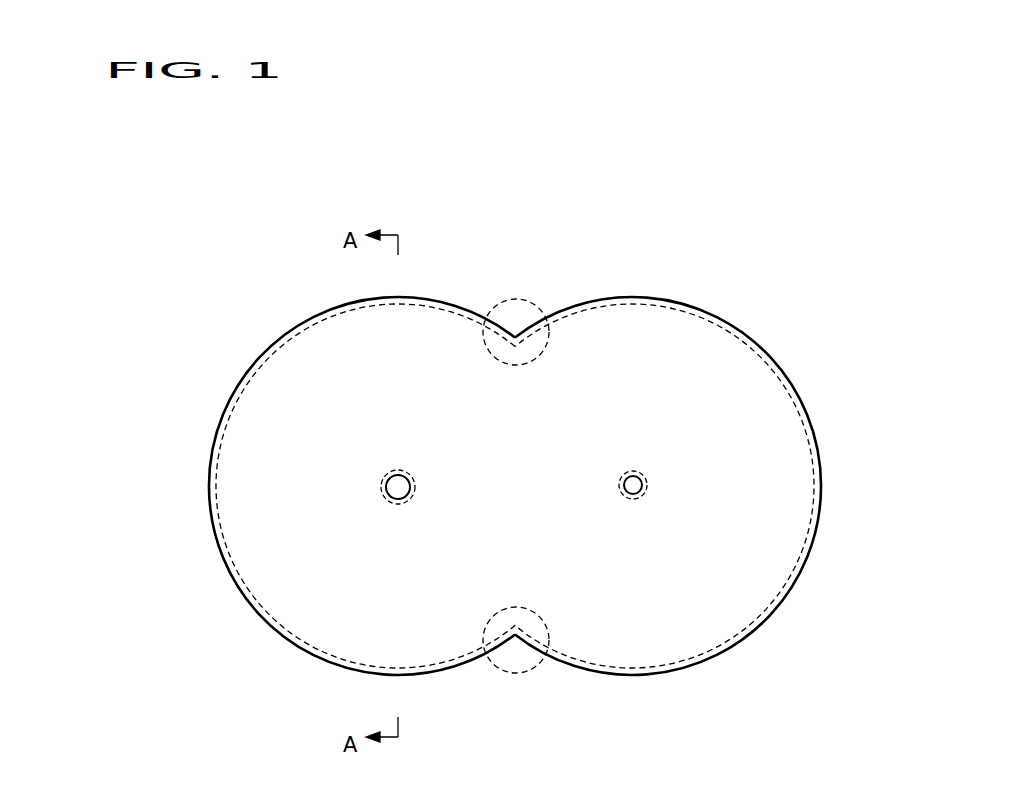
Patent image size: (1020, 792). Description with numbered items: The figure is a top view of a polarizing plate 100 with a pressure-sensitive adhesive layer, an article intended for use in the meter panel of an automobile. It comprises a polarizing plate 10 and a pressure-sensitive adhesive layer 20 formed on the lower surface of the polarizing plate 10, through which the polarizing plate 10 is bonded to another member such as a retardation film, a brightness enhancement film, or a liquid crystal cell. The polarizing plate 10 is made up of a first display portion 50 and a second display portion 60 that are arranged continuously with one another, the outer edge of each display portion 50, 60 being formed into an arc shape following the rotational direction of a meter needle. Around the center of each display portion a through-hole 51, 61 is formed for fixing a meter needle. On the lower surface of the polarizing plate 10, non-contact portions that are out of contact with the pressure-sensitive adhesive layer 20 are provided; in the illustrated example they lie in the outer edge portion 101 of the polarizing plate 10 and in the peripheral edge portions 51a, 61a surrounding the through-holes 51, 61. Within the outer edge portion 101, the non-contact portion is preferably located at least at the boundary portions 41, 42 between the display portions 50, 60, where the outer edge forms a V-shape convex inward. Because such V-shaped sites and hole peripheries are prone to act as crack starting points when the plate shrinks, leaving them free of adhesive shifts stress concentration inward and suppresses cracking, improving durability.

The polarizing plate with a pressure-sensitive adhesive layer 100 is at (843, 292).
The polarizing plate 10 is at (717, 360).
The outer edge portion 101 is at (821, 520).
The pressure-sensitive adhesive layer 20 is at (758, 576).
The first display portion 50 is at (267, 443).
The second display portion 60 is at (767, 412).
The through-hole 51 is at (391, 477).
The peripheral edge portion 51a is at (382, 487).
The through-hole 61 is at (644, 493).
The peripheral edge portion 61a is at (648, 485).
The boundary portion 41 is at (516, 336).
The boundary portion 42 is at (516, 636).